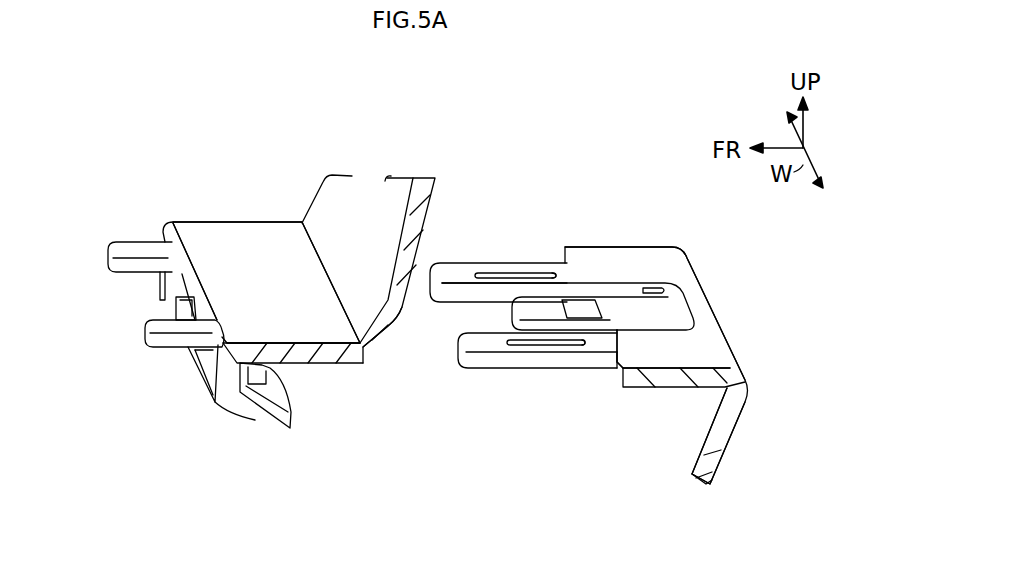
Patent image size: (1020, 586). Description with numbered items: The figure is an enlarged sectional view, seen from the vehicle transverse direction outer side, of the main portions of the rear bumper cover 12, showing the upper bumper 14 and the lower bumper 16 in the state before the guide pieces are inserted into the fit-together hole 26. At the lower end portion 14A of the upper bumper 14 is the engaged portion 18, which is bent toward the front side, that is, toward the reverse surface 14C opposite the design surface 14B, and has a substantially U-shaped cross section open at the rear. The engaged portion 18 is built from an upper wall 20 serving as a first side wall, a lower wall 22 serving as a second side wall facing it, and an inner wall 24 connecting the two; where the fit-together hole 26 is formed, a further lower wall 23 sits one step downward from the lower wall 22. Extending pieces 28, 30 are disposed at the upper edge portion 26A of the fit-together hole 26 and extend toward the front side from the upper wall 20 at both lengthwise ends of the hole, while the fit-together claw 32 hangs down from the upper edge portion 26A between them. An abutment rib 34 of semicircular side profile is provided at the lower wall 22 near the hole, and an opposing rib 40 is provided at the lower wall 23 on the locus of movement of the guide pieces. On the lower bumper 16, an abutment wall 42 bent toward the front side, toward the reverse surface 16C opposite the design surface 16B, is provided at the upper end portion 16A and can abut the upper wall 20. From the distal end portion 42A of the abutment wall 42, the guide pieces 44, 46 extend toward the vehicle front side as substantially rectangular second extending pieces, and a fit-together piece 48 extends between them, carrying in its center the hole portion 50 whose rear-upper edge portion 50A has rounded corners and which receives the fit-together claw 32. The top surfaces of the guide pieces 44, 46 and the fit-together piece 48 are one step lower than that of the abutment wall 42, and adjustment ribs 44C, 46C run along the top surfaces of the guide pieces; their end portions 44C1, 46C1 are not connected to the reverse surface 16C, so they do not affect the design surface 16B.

The rear bumper cover 12 is at (757, 244).
The upper bumper 14 is at (437, 196).
The lower end portion 14A is at (377, 364).
The design surface 14B is at (405, 315).
The reverse surface 14C is at (328, 197).
The lower bumper 16 is at (751, 405).
The upper end portion 16A is at (735, 352).
The design surface 16B is at (732, 446).
The reverse surface 16C is at (700, 447).
The engaged portion 18 is at (278, 440).
The upper wall 20 is at (253, 222).
The lower wall 22 is at (252, 413).
The lower wall 23 is at (264, 368).
The inner wall 24 is at (225, 373).
The fit-together hole 26 is at (198, 370).
The upper edge portion 26A is at (185, 265).
The extending piece 28 is at (156, 338).
The extending piece 30 is at (130, 245).
The fit-together claw 32 is at (178, 306).
The abutment rib 34 is at (290, 393).
The opposing rib 40 is at (160, 282).
The abutment wall 42 is at (667, 355).
The distal end portion 42A is at (615, 361).
The guide piece 44 is at (485, 365).
The adjustment rib 44C is at (542, 346).
The end portion 44C1 is at (598, 346).
The guide piece 46 is at (456, 268).
The adjustment rib 46C is at (500, 273).
The end portion 46C1 is at (556, 262).
The fit-together piece 48 is at (637, 302).
The hole portion 50 is at (578, 301).
The upper edge portion 50A is at (637, 303).